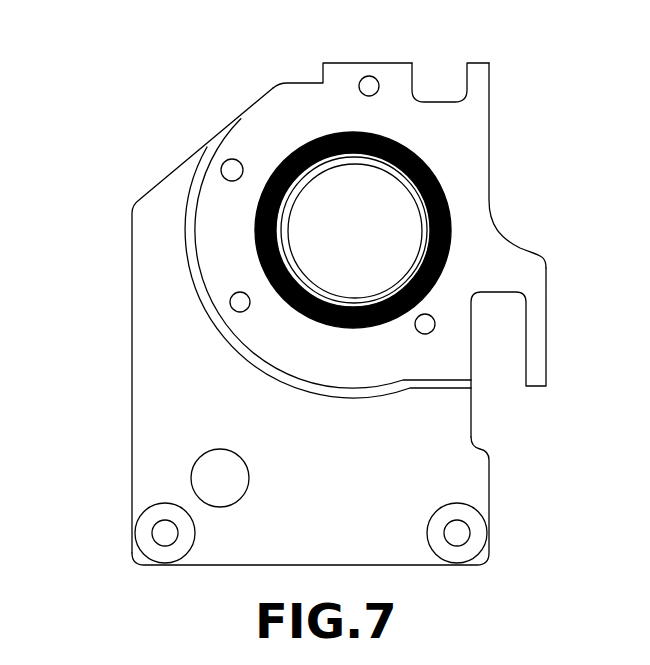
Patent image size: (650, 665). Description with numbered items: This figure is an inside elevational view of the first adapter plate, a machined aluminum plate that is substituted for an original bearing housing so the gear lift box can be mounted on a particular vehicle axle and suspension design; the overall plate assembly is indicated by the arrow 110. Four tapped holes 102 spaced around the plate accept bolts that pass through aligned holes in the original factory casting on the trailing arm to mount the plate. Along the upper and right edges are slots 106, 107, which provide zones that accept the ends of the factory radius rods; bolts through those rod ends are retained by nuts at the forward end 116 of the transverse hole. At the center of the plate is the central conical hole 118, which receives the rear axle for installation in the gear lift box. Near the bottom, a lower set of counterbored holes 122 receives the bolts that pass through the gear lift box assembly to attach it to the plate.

The tapped holes 102 is at (369, 76).
The slot 106 is at (467, 79).
The slot 107 is at (531, 352).
The bracket plate 110 is at (112, 250).
The forward end 116 is at (323, 70).
The central conical hole 118 is at (418, 192).
The counterbored holes 122 is at (152, 532).